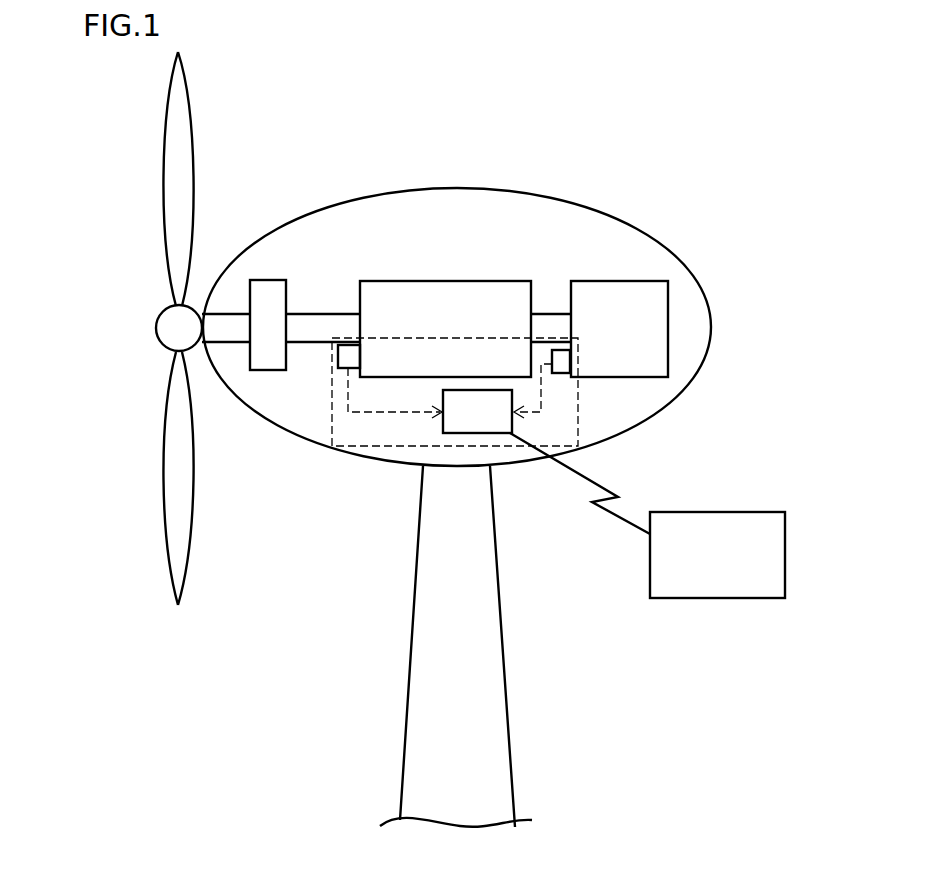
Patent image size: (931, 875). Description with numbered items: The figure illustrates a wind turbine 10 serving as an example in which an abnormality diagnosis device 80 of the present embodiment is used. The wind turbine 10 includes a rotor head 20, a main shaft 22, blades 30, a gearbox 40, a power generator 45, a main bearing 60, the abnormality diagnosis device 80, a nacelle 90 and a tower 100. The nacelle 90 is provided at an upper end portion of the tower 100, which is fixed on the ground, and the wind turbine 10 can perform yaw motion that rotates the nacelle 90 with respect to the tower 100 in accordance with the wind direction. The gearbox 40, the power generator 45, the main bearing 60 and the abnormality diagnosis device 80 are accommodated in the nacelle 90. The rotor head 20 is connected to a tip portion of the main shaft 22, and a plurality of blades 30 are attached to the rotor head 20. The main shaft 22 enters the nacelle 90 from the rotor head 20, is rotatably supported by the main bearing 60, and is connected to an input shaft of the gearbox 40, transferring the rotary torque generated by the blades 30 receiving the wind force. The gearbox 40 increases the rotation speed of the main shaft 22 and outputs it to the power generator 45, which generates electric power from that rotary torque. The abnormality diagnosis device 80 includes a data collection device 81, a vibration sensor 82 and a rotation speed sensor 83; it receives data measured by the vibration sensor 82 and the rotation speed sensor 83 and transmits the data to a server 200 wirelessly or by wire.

The wind turbine 10 is at (702, 66).
The rotor head 20 is at (167, 332).
The main shaft 22 is at (318, 327).
The blades 30 is at (177, 105).
The gearbox 40 is at (386, 306).
The power generator 45 is at (619, 307).
The main bearing 60 is at (268, 306).
The abnormality diagnosis device 80 is at (580, 397).
The data collection device 81 is at (443, 432).
The vibration sensor 82 is at (556, 375).
The rotation speed sensor 83 is at (355, 372).
The nacelle 90 is at (697, 282).
The tower 100 is at (482, 672).
The server 200 is at (717, 512).